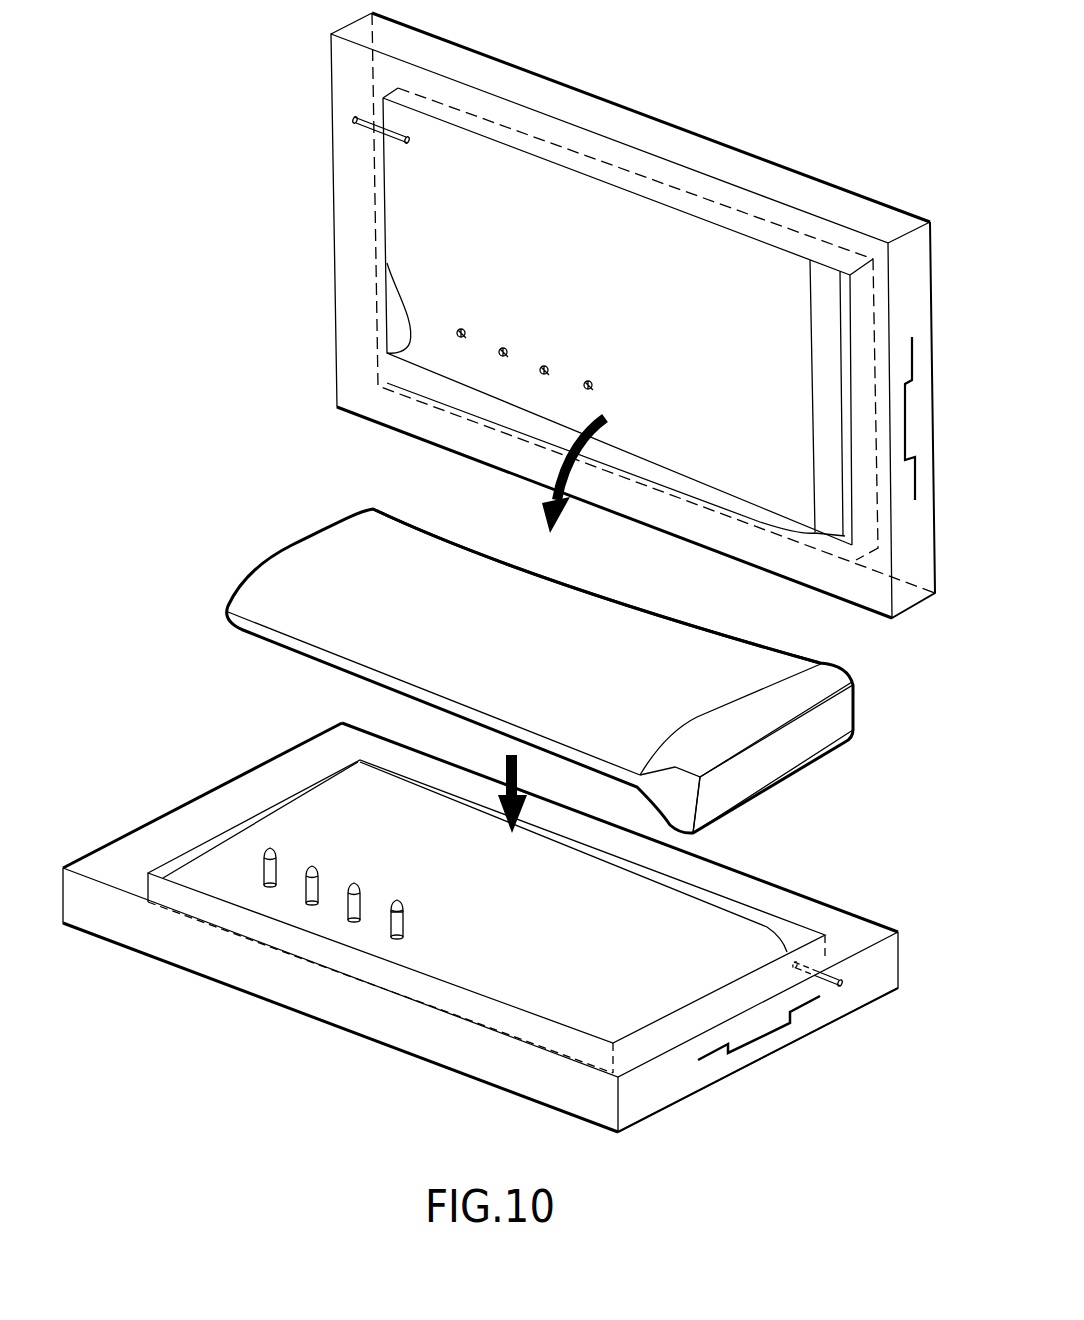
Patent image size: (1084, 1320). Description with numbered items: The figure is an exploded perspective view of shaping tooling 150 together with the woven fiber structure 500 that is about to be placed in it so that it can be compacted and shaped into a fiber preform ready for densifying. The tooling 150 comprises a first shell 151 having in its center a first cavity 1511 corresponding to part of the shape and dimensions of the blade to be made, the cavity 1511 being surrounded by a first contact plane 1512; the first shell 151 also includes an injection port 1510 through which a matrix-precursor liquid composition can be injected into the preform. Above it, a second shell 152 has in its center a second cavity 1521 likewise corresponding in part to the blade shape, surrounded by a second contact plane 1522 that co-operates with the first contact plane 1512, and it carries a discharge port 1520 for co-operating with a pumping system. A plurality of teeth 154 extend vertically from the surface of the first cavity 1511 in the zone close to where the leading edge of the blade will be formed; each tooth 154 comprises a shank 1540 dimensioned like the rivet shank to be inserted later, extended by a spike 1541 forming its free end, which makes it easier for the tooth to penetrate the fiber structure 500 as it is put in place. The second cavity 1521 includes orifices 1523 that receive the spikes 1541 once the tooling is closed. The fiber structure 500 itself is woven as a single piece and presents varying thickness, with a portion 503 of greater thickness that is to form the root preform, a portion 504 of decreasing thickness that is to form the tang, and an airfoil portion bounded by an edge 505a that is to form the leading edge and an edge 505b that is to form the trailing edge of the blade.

The shaping tooling 150 is at (148, 410).
The first shell 151 is at (197, 785).
The second shell 152 is at (320, 372).
The injection port 1510 is at (818, 988).
The first cavity 1511 is at (315, 832).
The first contact plane 1512 is at (112, 857).
The teeth 154 is at (392, 900).
The shank 1540 is at (403, 925).
The spike 1541 is at (403, 907).
The discharge port 1520 is at (363, 132).
The second cavity 1521 is at (420, 262).
The second contact plane 1522 is at (350, 63).
The orifices 1523 is at (588, 380).
The fiber structure 500 is at (274, 550).
The portion of greater thickness 503 is at (680, 795).
The portion of decreasing thickness 504 is at (637, 783).
The edge 505a is at (268, 636).
The edge 505b is at (650, 615).